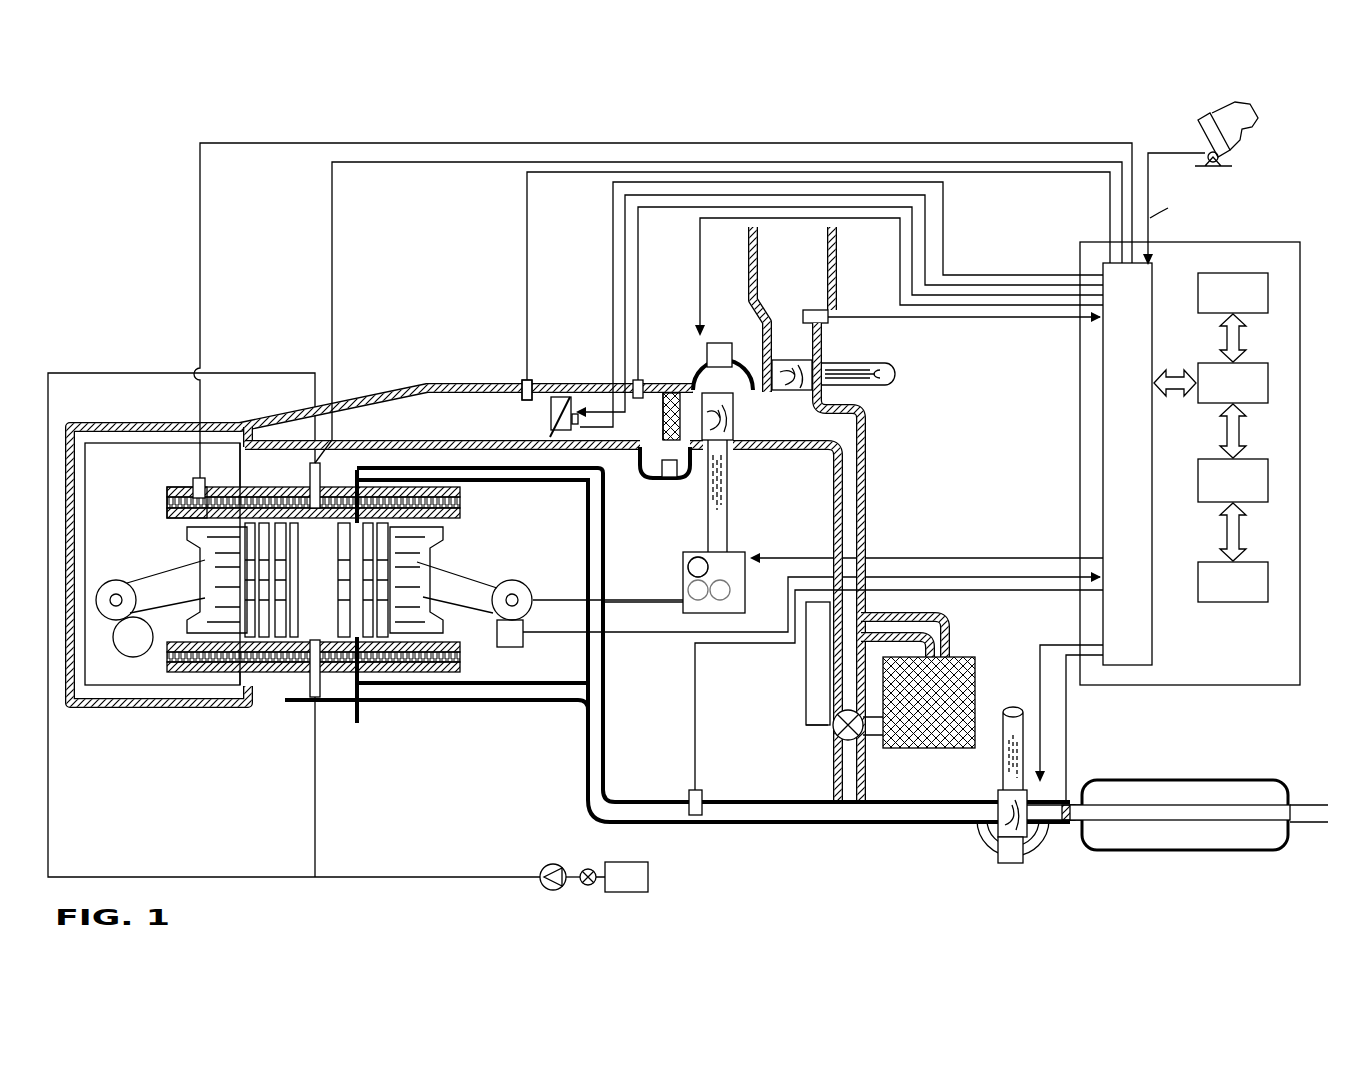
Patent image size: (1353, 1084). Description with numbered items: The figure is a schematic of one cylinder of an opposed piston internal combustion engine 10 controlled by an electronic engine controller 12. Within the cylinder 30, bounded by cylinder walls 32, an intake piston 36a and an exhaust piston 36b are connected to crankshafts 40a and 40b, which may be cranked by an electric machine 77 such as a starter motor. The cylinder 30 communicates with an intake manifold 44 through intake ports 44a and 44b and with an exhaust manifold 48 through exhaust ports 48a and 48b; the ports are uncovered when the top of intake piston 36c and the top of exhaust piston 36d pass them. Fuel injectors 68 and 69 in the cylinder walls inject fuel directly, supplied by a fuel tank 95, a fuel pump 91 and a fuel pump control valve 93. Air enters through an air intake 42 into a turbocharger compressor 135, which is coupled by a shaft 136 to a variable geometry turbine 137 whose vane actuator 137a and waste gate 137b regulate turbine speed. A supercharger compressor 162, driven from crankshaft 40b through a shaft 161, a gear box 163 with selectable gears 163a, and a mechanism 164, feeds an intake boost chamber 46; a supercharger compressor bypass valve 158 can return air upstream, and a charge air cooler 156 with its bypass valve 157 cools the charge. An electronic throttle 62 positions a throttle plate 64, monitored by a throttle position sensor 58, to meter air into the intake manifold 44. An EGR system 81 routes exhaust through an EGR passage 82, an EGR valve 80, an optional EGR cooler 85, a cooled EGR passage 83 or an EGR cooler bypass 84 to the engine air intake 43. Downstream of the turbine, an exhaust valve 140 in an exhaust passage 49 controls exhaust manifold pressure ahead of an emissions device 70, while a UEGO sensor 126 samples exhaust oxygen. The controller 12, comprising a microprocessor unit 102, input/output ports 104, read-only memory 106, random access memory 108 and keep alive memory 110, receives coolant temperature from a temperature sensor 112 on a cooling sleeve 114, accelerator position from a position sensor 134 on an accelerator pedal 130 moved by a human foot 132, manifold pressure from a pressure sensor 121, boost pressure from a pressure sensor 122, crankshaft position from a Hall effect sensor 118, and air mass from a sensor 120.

The opposed piston internal combustion engine 10 is at (168, 364).
The electronic engine controller 12 is at (1278, 242).
The cylinder 30 is at (303, 605).
The cylinder walls 32 is at (447, 512).
The intake piston 36a is at (205, 572).
The exhaust piston 36b is at (425, 567).
The top of intake piston 36c is at (286, 481).
The top of exhaust piston 36d is at (331, 684).
The crankshaft 40a is at (105, 615).
The crankshaft 40b is at (520, 580).
The air intake 42 is at (792, 309).
The engine air intake 43 is at (482, 330).
The intake manifold 44 is at (386, 545).
The intake port 44a is at (238, 683).
The intake port 44b is at (240, 480).
The intake boost chamber 46 is at (643, 416).
The exhaust manifold 48 is at (500, 482).
The exhaust port 48a is at (371, 693).
The exhaust port 48b is at (360, 468).
The exhaust passage 49 is at (1078, 800).
The throttle position sensor 58 is at (580, 422).
The electronic throttle 62 is at (816, 286).
The throttle plate 64 is at (562, 395).
The fuel injector 68 is at (320, 463).
The fuel injector 69 is at (310, 700).
The emissions device 70 is at (1120, 782).
The electric machine 77 is at (133, 637).
The EGR valve 80 is at (836, 733).
The EGR system 81 is at (800, 704).
The EGR passage 82 is at (858, 520).
The cooled EGR passage 83 is at (945, 650).
The EGR cooler bypass 84 is at (840, 695).
The EGR cooler 85 is at (885, 748).
The fuel pump 91 is at (553, 866).
The fuel pump control valve 93 is at (580, 882).
The fuel tank 95 is at (626, 877).
The microprocessor unit 102 is at (1270, 380).
The input/output ports 104 is at (1158, 270).
The read-only memory 106 is at (1270, 290).
The random access memory 108 is at (1270, 478).
The keep alive memory 110 is at (1270, 575).
The temperature sensor 112 is at (193, 480).
The cooling sleeve 114 is at (175, 518).
The Hall effect sensor 118 is at (510, 647).
The air mass sensor 120 is at (822, 312).
The pressure sensor 121 is at (522, 380).
The pressure sensor 122 is at (641, 378).
The universal exhaust gas oxygen sensor 126 is at (688, 792).
The accelerator pedal 130 is at (1198, 140).
The human foot 132 is at (1255, 118).
The position sensor 134 is at (1225, 160).
The turbocharger compressor 135 is at (805, 368).
The shaft 136 is at (855, 385).
The turbocharger variable geometry turbine 137 is at (998, 800).
The vane actuator 137a is at (990, 828).
The waste gate 137b is at (1008, 863).
The exhaust valve 140 is at (1068, 822).
The charge air cooler 156 is at (660, 398).
The air charge cooler bypass valve 157 is at (668, 478).
The supercharger compressor bypass valve 158 is at (725, 343).
The shaft 161 is at (708, 530).
The supercharger compressor 162 is at (733, 445).
The gear box 163 is at (683, 575).
The gears 163a is at (700, 565).
The mechanism 164 is at (683, 605).